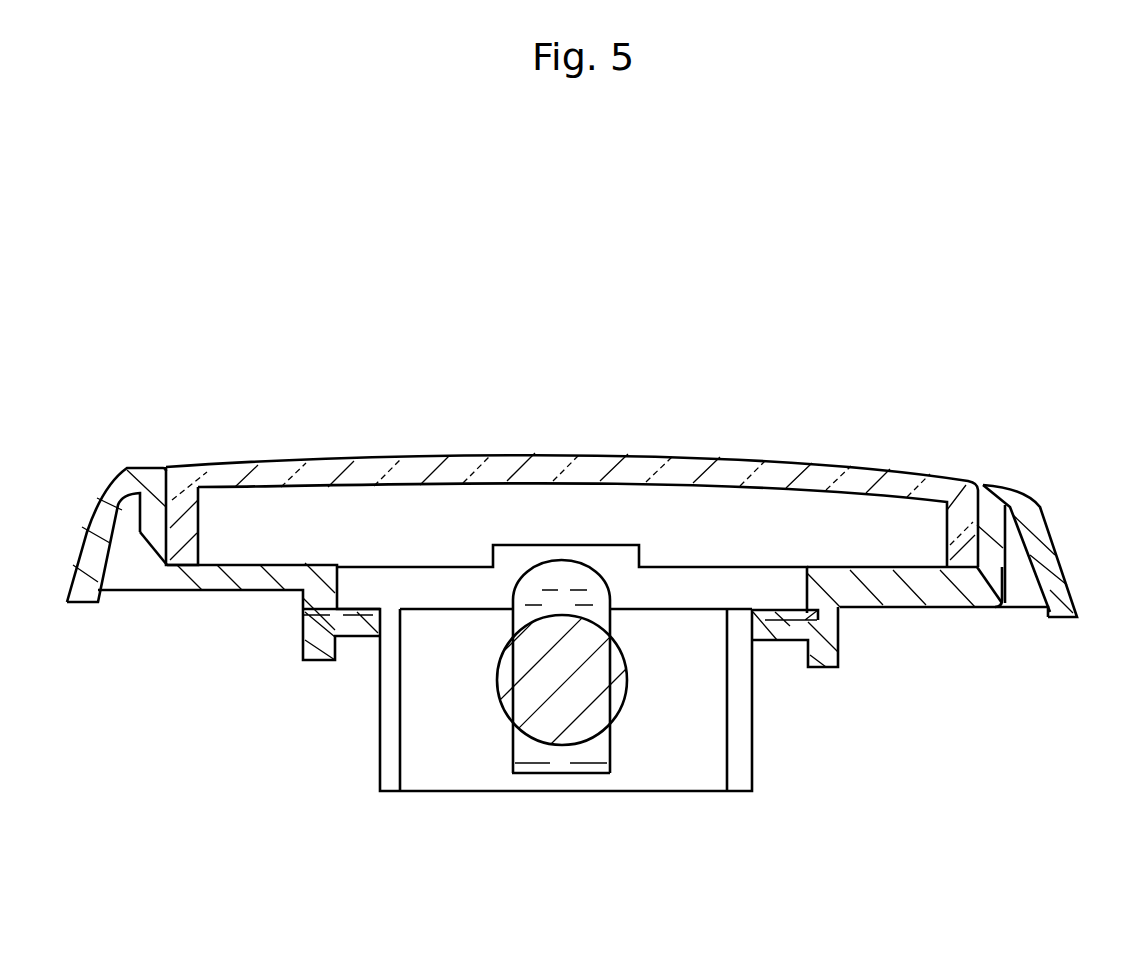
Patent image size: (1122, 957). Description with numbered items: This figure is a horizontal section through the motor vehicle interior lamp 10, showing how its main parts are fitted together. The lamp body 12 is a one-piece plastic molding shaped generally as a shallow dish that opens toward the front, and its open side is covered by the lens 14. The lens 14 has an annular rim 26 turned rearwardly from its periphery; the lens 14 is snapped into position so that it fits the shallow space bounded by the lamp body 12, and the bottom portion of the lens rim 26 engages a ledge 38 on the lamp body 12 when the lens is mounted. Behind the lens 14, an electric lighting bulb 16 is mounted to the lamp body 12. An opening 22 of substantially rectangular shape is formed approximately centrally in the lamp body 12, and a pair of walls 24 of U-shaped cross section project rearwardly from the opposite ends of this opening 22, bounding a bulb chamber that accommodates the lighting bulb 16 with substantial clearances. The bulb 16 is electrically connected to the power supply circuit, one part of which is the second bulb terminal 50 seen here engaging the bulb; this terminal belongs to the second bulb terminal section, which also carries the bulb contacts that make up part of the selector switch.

The motor vehicle interior lamp 10 is at (503, 380).
The lamp body 12 is at (1040, 505).
The lens 14 is at (305, 475).
The electric lighting bulb 16 is at (552, 740).
The opening 22 is at (728, 627).
The walls 24 is at (738, 770).
The annular rim 26 is at (187, 530).
The ledge 38 is at (605, 557).
The second bulb terminal 50 is at (590, 753).